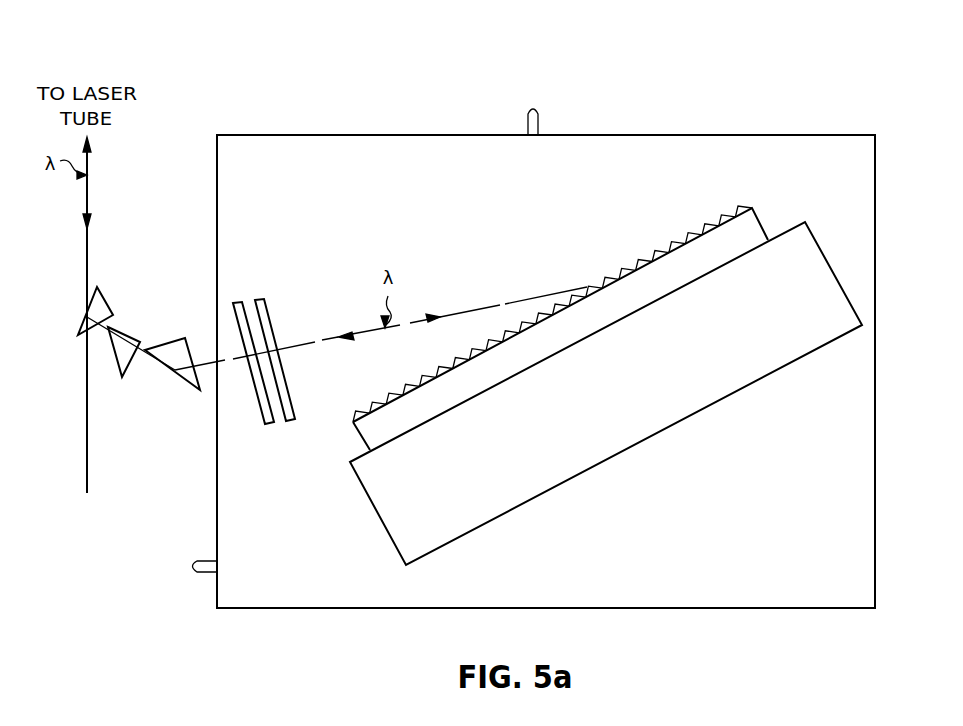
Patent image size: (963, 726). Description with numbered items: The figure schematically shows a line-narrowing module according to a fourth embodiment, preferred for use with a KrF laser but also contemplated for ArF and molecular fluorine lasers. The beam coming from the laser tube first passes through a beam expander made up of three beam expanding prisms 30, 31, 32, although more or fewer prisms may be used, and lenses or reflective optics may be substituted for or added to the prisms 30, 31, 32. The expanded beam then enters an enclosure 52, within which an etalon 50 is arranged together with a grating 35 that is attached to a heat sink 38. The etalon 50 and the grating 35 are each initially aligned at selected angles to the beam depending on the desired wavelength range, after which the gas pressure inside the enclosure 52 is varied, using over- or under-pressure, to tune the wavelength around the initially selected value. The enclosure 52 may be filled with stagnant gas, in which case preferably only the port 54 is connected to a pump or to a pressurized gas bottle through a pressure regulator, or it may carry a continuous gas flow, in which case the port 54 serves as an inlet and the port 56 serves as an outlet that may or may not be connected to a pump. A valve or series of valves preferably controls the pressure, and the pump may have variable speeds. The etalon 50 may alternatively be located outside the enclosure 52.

The beam expanding prism 30 is at (107, 302).
The beam expanding prism 31 is at (130, 328).
The beam expanding prism 32 is at (170, 338).
The grating 35 is at (692, 230).
The heat sink 38 is at (853, 307).
The etalon 50 is at (276, 324).
The enclosure 52 is at (580, 135).
The port 54 is at (528, 116).
The port 56 is at (193, 567).